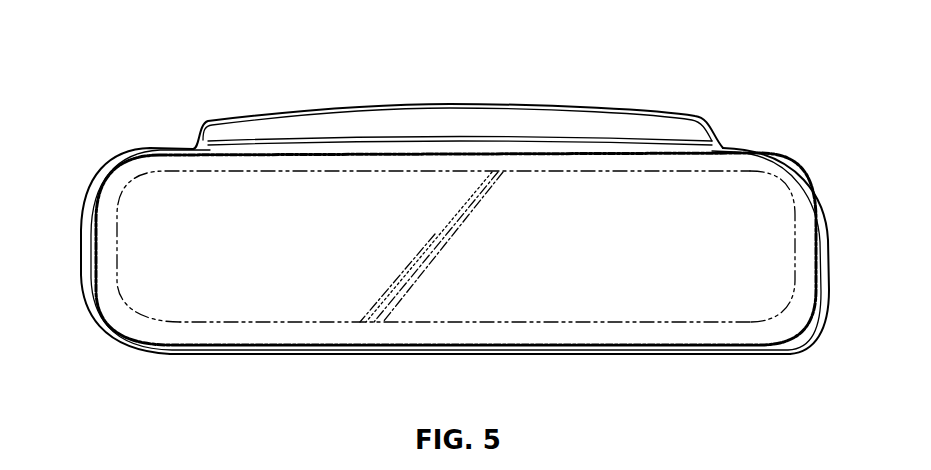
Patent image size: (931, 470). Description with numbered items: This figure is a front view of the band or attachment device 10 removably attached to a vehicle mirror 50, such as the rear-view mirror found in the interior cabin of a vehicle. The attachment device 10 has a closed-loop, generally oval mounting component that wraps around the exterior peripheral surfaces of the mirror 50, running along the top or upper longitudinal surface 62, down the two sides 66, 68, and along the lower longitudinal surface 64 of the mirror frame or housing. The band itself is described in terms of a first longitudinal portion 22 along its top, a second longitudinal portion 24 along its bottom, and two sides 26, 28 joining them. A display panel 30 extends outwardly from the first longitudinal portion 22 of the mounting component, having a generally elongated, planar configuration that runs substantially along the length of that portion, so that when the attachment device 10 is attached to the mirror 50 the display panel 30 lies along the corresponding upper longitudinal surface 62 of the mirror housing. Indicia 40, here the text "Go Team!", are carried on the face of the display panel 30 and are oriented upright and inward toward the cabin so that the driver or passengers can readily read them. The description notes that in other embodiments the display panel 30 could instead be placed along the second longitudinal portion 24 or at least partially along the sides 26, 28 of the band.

The attachment device 10 is at (675, 77).
The first longitudinal portion 22 is at (593, 145).
The second longitudinal portion 24 is at (493, 353).
The side of band 26 is at (93, 224).
The side of band 28 is at (815, 218).
The display panel 30 is at (282, 109).
The indicia 40 is at (398, 117).
The vehicle mirror 50 is at (630, 275).
The upper longitudinal surface 62 is at (450, 161).
The lower longitudinal surface 64 is at (421, 333).
The side of mirror 66 is at (107, 240).
The side of mirror 68 is at (791, 244).